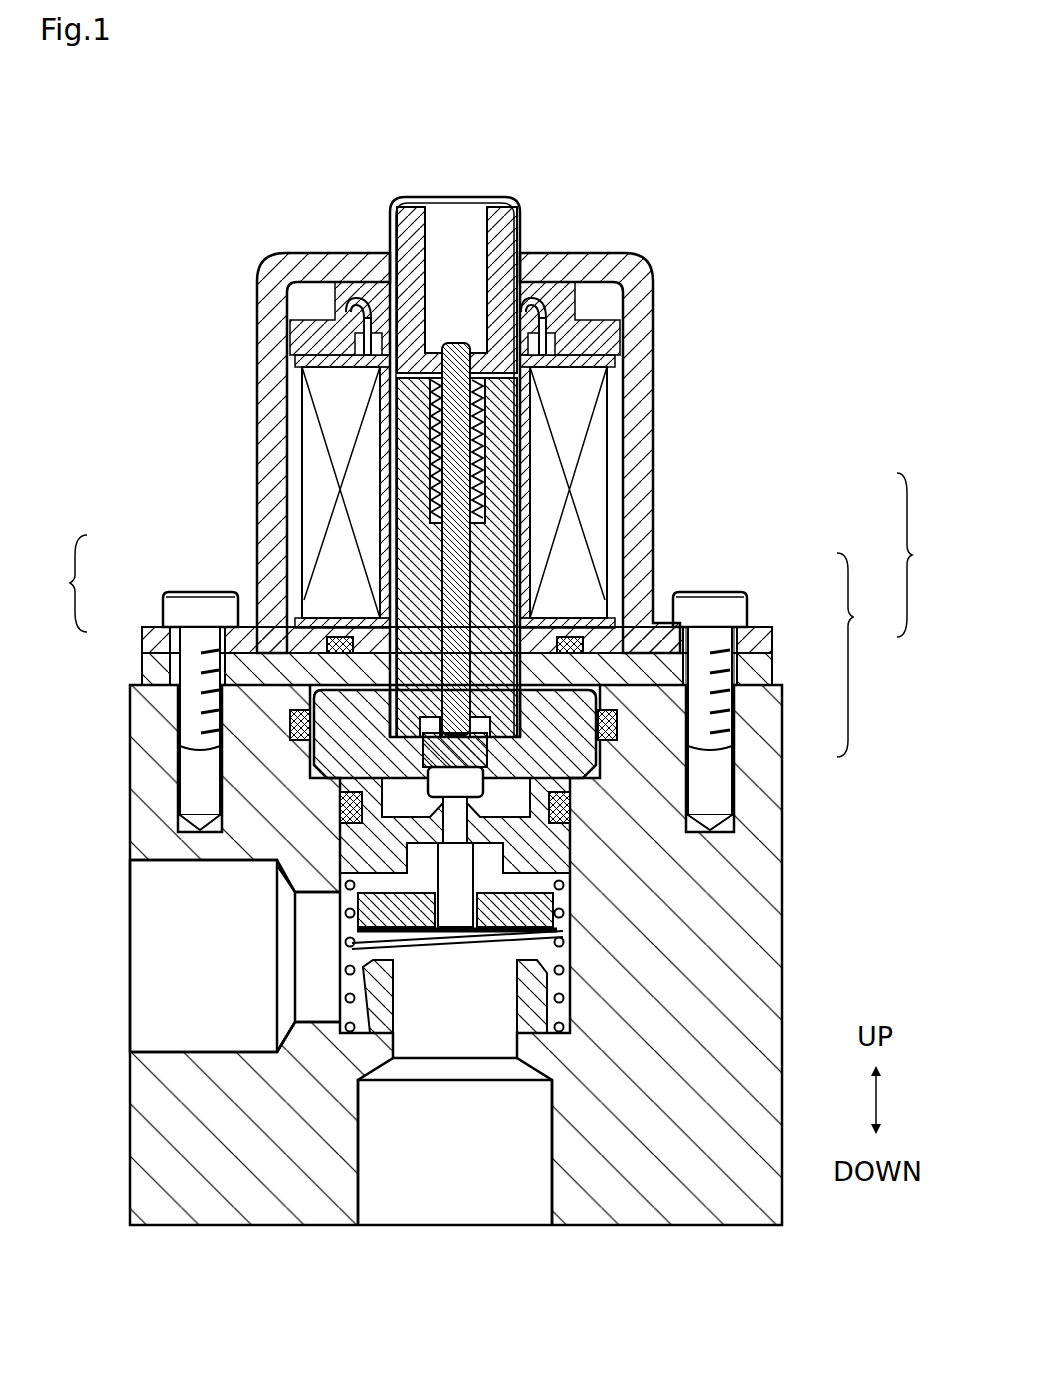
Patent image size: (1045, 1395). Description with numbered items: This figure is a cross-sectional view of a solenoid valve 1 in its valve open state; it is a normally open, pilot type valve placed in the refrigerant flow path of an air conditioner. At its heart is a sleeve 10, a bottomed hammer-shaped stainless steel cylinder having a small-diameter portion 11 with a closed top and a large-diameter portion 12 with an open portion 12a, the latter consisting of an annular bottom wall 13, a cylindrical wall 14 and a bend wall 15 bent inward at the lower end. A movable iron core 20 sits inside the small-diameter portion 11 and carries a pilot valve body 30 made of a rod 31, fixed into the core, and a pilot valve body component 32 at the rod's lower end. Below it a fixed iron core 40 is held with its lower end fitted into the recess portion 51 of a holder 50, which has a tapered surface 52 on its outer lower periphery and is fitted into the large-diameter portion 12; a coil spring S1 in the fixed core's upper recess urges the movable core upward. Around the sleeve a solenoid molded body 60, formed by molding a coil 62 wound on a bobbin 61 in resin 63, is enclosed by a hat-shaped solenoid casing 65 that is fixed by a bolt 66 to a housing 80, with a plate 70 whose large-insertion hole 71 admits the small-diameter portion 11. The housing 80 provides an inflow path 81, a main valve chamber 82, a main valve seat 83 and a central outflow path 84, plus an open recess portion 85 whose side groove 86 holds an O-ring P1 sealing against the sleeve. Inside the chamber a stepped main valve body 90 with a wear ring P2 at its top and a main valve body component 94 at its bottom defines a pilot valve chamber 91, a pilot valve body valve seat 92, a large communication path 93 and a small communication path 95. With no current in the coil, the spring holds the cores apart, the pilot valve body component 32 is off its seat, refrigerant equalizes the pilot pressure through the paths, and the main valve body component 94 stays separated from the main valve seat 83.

The solenoid valve 1 is at (646, 176).
The sleeve 10 is at (924, 555).
The small-diameter portion 11 is at (655, 537).
The large-diameter portion 12 is at (868, 655).
The open portion 12a is at (622, 758).
The annular bottom wall 13 is at (590, 642).
The cylindrical wall 14 is at (655, 665).
The bend wall 15 is at (660, 670).
The movable iron core 20 is at (486, 198).
The pilot valve body 30 is at (58, 583).
The rod 31 is at (212, 600).
The pilot valve body component 32 is at (232, 645).
The fixed iron core 40 is at (420, 505).
The coil spring S1 is at (430, 445).
The holder 50 is at (315, 757).
The recess portion 51 is at (600, 700).
The tapered surface 52 is at (490, 792).
The solenoid molded body 60 is at (607, 294).
The bobbin 61 is at (552, 348).
The coil 62 is at (590, 437).
The resin 63 is at (628, 470).
The solenoid casing 65 is at (657, 311).
The bolt 66 is at (712, 607).
The plate 70 is at (152, 668).
The large-insertion hole 71 is at (395, 642).
The housing 80 is at (152, 790).
The inflow path 81 is at (200, 868).
The main valve chamber 82 is at (555, 964).
The main valve seat 83 is at (563, 1010).
The outflow path 84 is at (545, 1170).
The open recess portion 85 is at (246, 862).
The groove 86 is at (338, 800).
The main valve body 90 is at (560, 910).
The pilot valve chamber 91 is at (614, 726).
The pilot valve body valve seat 92 is at (566, 808).
The large communication path 93 is at (466, 926).
The main valve body component 94 is at (492, 945).
The small communication path 95 is at (345, 878).
The O-ring P1 is at (300, 717).
The wear ring P2 is at (292, 862).